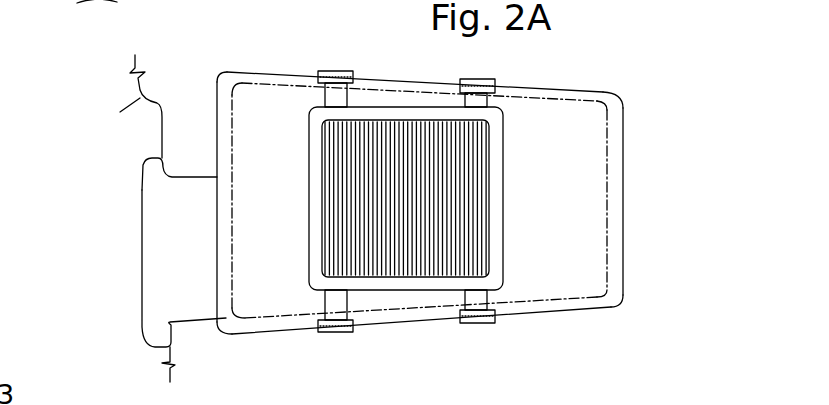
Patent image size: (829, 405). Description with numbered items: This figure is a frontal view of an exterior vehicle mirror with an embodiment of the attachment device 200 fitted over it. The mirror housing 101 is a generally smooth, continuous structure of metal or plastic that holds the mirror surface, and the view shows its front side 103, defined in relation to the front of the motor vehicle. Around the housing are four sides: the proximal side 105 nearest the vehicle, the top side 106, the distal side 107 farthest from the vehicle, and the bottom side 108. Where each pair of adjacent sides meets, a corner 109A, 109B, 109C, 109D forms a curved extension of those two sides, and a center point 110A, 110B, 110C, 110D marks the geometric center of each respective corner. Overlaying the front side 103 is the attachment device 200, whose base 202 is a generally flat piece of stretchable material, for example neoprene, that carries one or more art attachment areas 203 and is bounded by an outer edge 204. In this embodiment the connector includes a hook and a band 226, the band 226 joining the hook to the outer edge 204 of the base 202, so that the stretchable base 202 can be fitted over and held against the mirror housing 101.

The mirror housing 101 is at (637, 178).
The front side 103 is at (555, 118).
The proximal side 105 is at (217, 137).
The top side 106 is at (280, 73).
The distal side 107 is at (623, 272).
The bottom side 108 is at (400, 323).
The corner 109A is at (213, 84).
The corner 109B is at (625, 110).
The corner 109C is at (612, 308).
The corner 109D is at (232, 338).
The center point 110A is at (222, 72).
The center point 110B is at (617, 92).
The center point 110C is at (613, 308).
The center point 110D is at (227, 335).
The attachment device 200 is at (514, 184).
The base 202 is at (313, 225).
The art attachment area 203 is at (462, 242).
The outer edge 204 is at (308, 192).
The band 226 is at (323, 306).